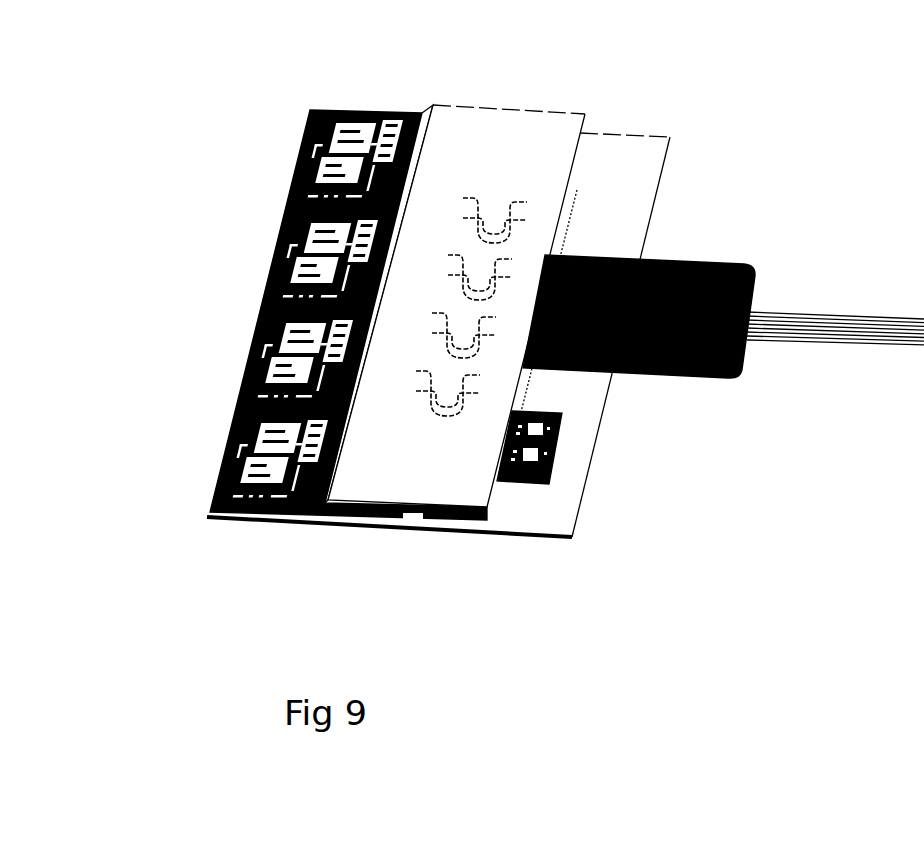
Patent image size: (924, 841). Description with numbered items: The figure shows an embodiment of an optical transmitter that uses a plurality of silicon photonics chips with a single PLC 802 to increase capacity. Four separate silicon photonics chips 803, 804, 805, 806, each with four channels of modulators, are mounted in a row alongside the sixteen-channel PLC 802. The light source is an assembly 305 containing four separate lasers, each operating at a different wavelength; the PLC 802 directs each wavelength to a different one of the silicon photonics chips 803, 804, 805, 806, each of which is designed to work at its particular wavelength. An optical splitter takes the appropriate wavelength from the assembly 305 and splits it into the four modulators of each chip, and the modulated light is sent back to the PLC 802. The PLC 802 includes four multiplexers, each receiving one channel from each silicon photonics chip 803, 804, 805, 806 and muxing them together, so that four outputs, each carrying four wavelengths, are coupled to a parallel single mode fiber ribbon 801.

The assembly 305 is at (543, 490).
The parallel single mode fiber ribbon 801 is at (675, 378).
The PLC 802 is at (527, 162).
The silicon photonics chip 803 is at (340, 108).
The silicon photonics chip 804 is at (287, 199).
The silicon photonics chip 805 is at (257, 313).
The silicon photonics chip 806 is at (230, 411).